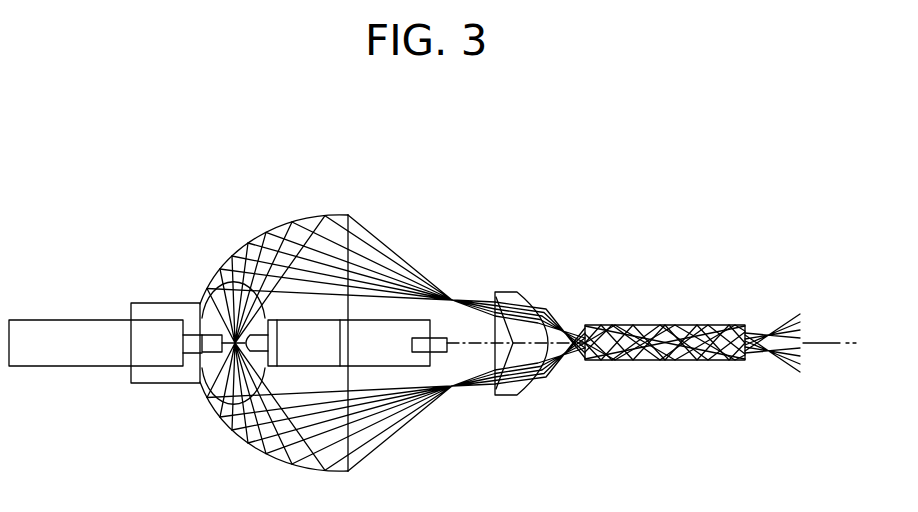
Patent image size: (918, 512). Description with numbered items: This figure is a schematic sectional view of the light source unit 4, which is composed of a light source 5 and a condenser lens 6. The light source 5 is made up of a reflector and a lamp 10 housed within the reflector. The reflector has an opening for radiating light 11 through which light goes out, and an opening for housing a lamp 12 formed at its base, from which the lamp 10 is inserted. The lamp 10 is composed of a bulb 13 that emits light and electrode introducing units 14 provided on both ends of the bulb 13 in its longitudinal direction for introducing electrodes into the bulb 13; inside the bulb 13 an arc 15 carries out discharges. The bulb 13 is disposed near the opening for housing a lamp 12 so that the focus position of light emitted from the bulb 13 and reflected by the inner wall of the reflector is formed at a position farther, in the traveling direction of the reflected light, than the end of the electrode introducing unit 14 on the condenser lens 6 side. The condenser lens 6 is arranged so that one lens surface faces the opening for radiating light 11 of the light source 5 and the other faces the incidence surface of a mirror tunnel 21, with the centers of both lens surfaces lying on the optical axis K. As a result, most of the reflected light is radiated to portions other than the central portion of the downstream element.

The light source unit 4 is at (540, 160).
The light source 5 is at (272, 168).
The condenser lens 6 is at (503, 290).
The lamp 10 is at (207, 212).
The opening for radiating light 11 is at (351, 219).
The opening for housing a lamp 12 is at (198, 313).
The bulb 13 is at (212, 386).
The electrode introducing unit 14 is at (47, 366).
The arc 15 is at (205, 363).
The mirror tunnel 21 is at (627, 325).
The optical axis K is at (463, 340).